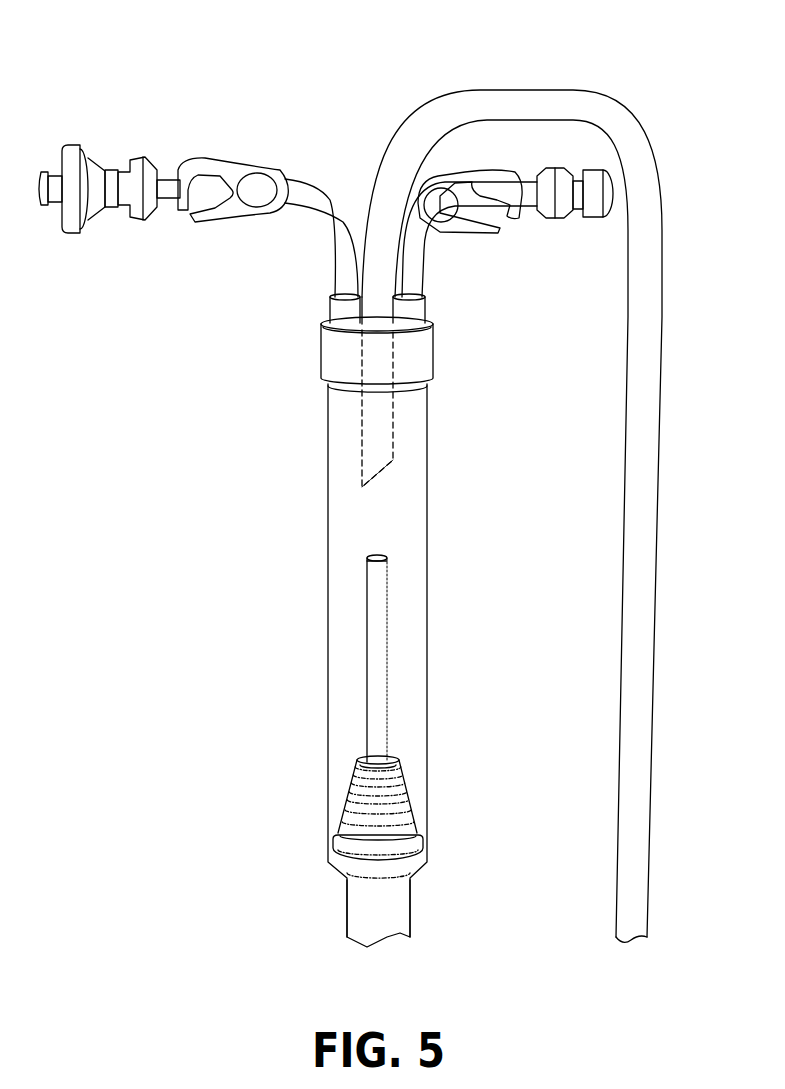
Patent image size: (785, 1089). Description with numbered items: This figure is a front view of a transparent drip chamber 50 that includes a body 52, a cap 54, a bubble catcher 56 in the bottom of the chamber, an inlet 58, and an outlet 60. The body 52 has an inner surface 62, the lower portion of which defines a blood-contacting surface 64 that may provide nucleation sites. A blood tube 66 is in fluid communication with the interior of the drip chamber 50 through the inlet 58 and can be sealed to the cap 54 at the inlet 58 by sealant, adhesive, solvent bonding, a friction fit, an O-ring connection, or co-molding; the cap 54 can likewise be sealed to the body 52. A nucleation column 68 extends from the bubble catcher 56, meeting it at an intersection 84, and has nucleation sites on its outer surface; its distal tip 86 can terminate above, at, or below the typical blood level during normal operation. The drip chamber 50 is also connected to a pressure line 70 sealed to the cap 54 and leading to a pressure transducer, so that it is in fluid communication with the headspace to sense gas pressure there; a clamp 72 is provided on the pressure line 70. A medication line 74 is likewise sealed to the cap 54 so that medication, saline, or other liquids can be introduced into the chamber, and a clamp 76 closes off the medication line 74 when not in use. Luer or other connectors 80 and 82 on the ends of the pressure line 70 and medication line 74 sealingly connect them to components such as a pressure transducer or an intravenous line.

The drip chamber 50 is at (250, 497).
The body 52 is at (327, 423).
The cap 54 is at (320, 345).
The bubble catcher 56 is at (362, 797).
The inlet 58 is at (380, 328).
The outlet 60 is at (347, 907).
The inner surface 62 is at (427, 417).
The blood-contacting surface 64 is at (328, 667).
The blood tube 66 is at (652, 435).
The nucleation column 68 is at (387, 668).
The pressure line 70 is at (323, 183).
The clamp 72 is at (230, 227).
The medication line 74 is at (426, 262).
The clamp 76 is at (467, 173).
The connector 80 is at (130, 157).
The connector 82 is at (560, 170).
The intersection 84 is at (382, 768).
The distal tip 86 is at (380, 552).